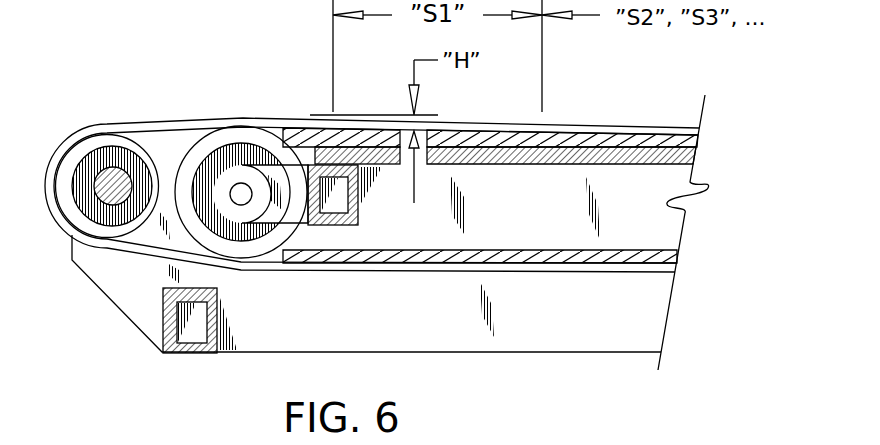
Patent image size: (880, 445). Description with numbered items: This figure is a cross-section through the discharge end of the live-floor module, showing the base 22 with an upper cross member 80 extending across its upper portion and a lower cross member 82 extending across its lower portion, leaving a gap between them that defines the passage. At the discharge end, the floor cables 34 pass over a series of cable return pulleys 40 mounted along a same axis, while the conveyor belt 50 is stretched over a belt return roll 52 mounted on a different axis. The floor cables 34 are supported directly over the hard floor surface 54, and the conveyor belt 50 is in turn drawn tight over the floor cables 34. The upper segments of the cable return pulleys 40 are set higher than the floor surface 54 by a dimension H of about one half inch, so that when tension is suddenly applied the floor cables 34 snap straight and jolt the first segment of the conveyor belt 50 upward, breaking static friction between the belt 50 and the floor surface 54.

The base 22 is at (258, 352).
The floor cables 34 is at (600, 146).
The cable return pulleys 40 is at (182, 148).
The conveyor belt 50 is at (148, 120).
The belt return roll 52 is at (80, 158).
The hard floor surface 54 is at (527, 166).
The upper cross members 80 is at (307, 166).
The lower cross members 82 is at (163, 320).